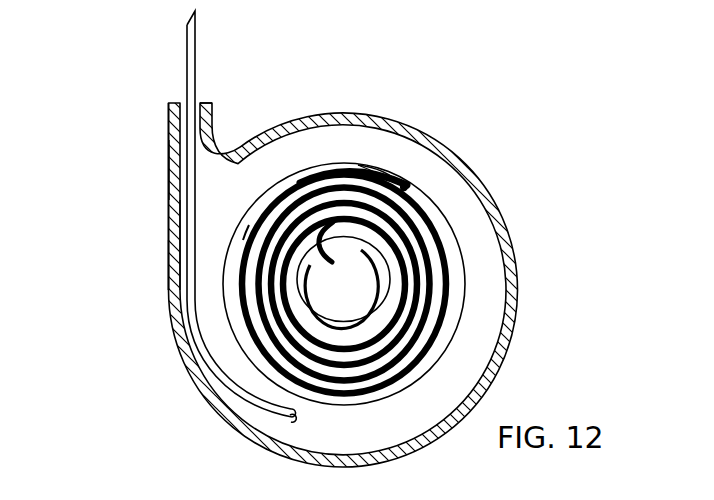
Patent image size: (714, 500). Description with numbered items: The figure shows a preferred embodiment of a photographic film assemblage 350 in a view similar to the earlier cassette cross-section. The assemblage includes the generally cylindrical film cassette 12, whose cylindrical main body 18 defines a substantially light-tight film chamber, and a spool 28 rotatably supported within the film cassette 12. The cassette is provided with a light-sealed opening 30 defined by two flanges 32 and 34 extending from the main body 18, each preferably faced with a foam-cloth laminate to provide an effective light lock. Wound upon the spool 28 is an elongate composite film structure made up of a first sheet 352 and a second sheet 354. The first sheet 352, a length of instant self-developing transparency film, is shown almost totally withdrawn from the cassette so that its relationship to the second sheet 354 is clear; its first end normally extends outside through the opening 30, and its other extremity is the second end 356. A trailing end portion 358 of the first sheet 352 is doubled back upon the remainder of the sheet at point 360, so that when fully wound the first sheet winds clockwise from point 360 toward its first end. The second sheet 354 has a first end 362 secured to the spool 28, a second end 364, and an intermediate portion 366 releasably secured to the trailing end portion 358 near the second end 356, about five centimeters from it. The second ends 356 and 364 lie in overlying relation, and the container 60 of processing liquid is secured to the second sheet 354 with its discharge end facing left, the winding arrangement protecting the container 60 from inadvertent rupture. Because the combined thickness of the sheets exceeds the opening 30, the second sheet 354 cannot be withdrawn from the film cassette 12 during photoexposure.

The film cassette 12 is at (160, 281).
The main body 18 is at (476, 170).
The spool 28 is at (389, 291).
The opening 30 is at (186, 103).
The flange 32 is at (168, 132).
The flange 34 is at (212, 118).
The container of processing liquid 60 is at (358, 165).
The photographic film assemblage 350 is at (153, 208).
The first sheet 352 is at (180, 238).
The second sheet 354 is at (450, 285).
The second end 356 is at (408, 172).
The trailing end portion 358 is at (237, 347).
The point 360 is at (294, 417).
The first end 362 is at (333, 262).
The second end 364 is at (406, 188).
The intermediate portion 366 is at (243, 238).